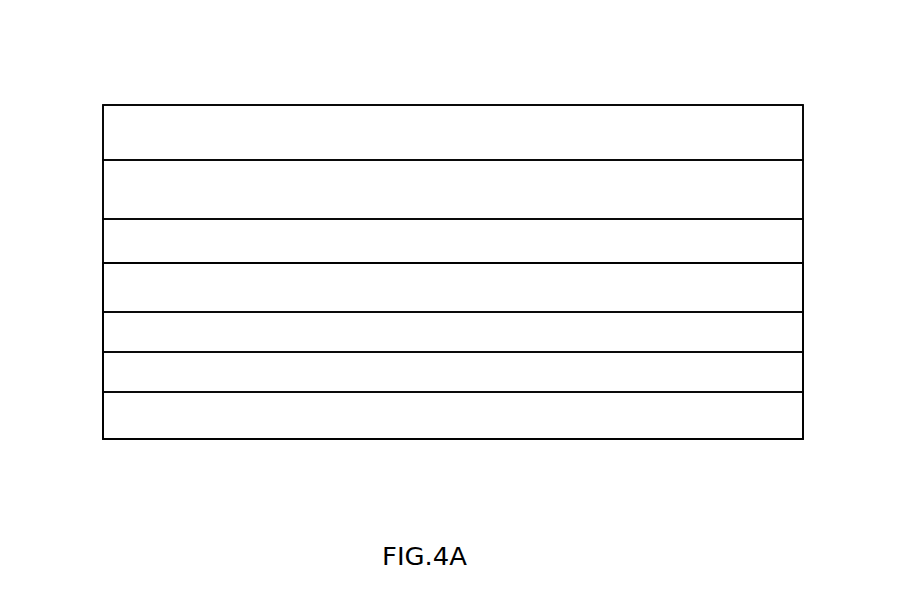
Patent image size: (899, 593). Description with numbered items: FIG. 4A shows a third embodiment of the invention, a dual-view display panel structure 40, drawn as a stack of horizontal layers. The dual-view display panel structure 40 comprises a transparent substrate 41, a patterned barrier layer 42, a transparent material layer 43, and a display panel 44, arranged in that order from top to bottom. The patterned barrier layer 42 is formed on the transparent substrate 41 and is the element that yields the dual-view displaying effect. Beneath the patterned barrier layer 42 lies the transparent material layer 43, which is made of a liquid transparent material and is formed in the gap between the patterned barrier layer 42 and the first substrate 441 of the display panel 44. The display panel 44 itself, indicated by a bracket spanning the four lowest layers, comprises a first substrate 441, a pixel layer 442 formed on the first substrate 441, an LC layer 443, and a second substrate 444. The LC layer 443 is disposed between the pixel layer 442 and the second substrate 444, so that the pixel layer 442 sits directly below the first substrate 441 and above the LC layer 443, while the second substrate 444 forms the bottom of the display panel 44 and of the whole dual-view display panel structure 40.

The dual-view display panel structure 40 is at (38, 41).
The transparent substrate 41 is at (103, 145).
The patterned barrier layer 42 is at (103, 197).
The transparent material layer 43 is at (103, 240).
The display panel 44 is at (825, 273).
The first substrate 441 is at (103, 288).
The pixel layer 442 is at (103, 328).
The LC layer 443 is at (103, 367).
The second substrate 444 is at (103, 418).